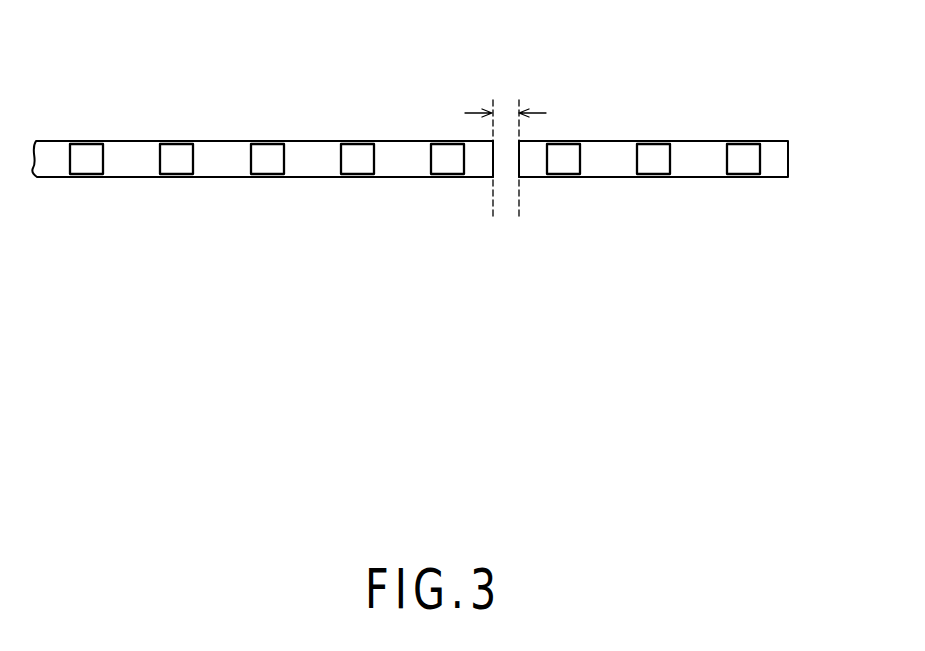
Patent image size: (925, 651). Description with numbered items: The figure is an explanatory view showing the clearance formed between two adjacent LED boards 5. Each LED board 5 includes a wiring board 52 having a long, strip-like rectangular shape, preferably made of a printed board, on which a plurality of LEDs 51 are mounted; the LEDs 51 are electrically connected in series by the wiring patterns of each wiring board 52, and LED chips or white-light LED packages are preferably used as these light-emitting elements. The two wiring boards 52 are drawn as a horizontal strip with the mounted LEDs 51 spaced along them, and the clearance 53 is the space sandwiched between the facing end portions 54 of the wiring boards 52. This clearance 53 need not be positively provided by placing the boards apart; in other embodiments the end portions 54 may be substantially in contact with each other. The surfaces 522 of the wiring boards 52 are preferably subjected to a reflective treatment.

The LED board 5 is at (431, 138).
The LED 51 is at (173, 163).
The wiring board 52 is at (431, 111).
The surface of the wiring board 522 is at (323, 147).
The clearance 53 is at (506, 100).
The end portion 54 is at (492, 160).